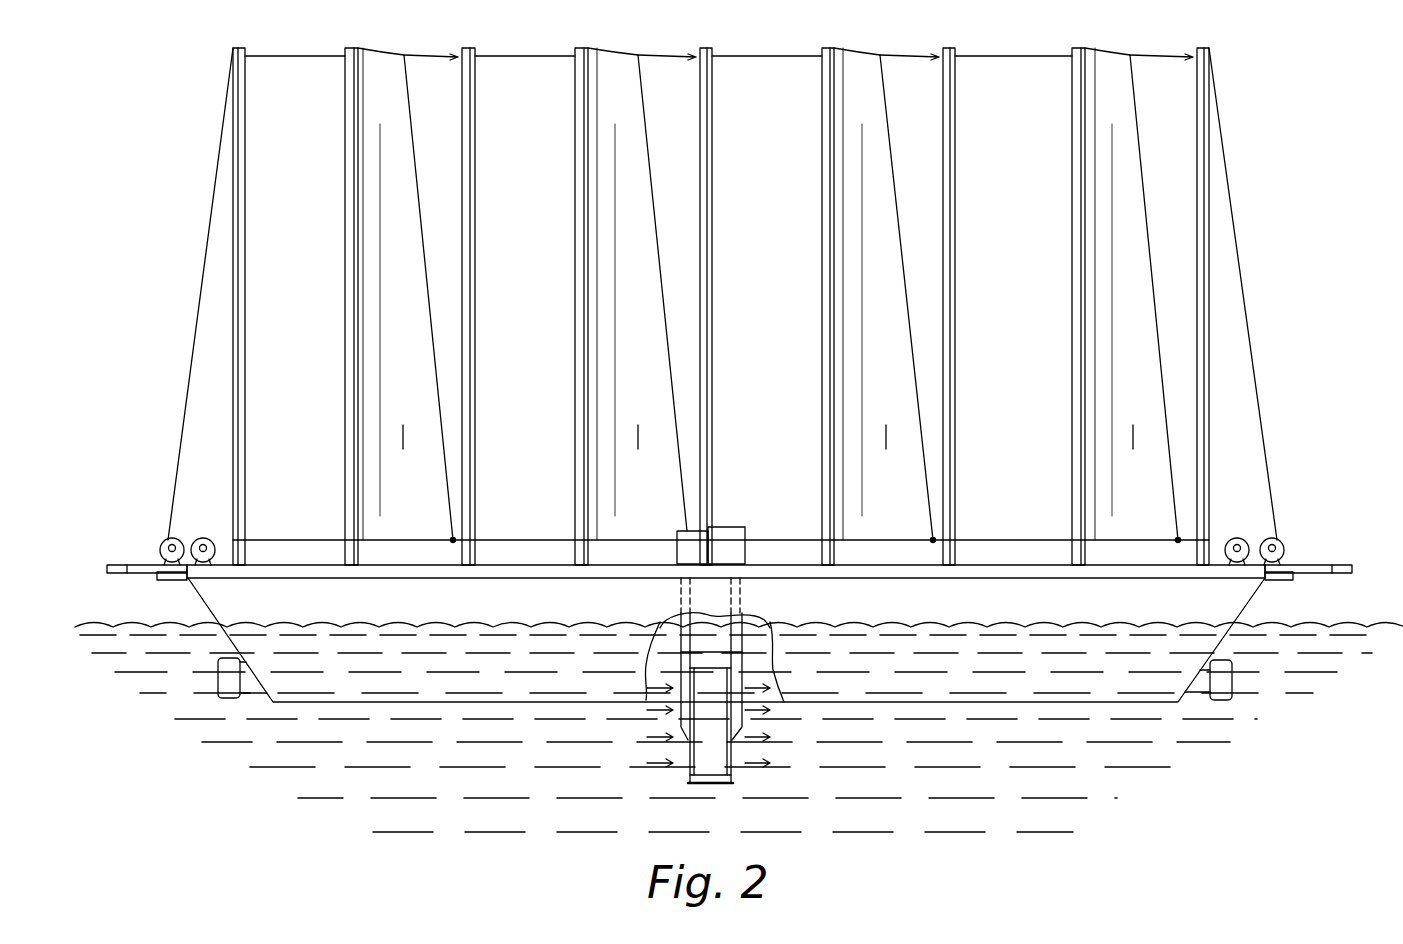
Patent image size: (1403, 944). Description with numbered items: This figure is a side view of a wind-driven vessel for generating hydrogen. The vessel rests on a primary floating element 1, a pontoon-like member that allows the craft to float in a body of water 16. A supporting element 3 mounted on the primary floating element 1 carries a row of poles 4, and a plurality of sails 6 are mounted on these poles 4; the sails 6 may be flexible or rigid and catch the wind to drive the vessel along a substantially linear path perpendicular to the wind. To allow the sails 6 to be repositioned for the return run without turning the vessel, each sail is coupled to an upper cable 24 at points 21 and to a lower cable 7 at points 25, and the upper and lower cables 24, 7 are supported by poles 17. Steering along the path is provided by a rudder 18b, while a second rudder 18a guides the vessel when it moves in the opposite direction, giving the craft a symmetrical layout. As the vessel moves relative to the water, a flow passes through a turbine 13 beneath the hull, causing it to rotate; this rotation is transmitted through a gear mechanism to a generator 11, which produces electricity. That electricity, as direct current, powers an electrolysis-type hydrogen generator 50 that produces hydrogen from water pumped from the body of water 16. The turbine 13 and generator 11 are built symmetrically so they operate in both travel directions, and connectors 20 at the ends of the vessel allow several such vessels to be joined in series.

The primary floating element 1 is at (215, 603).
The supporting element 3 is at (318, 575).
The poles 4 is at (350, 48).
The sails 6 is at (383, 68).
The lower cable 7 is at (290, 540).
The generator 11 is at (740, 528).
The turbine 13 is at (712, 781).
The body of water 16 is at (1353, 633).
The poles 17 is at (243, 49).
The second rudder 18a is at (226, 686).
The rudder 18b is at (1228, 683).
The connectors 20 is at (108, 566).
The points 21 is at (1186, 55).
The upper cable 24 is at (193, 333).
The points 25 is at (1178, 542).
The hydrogen generator 50 is at (691, 544).